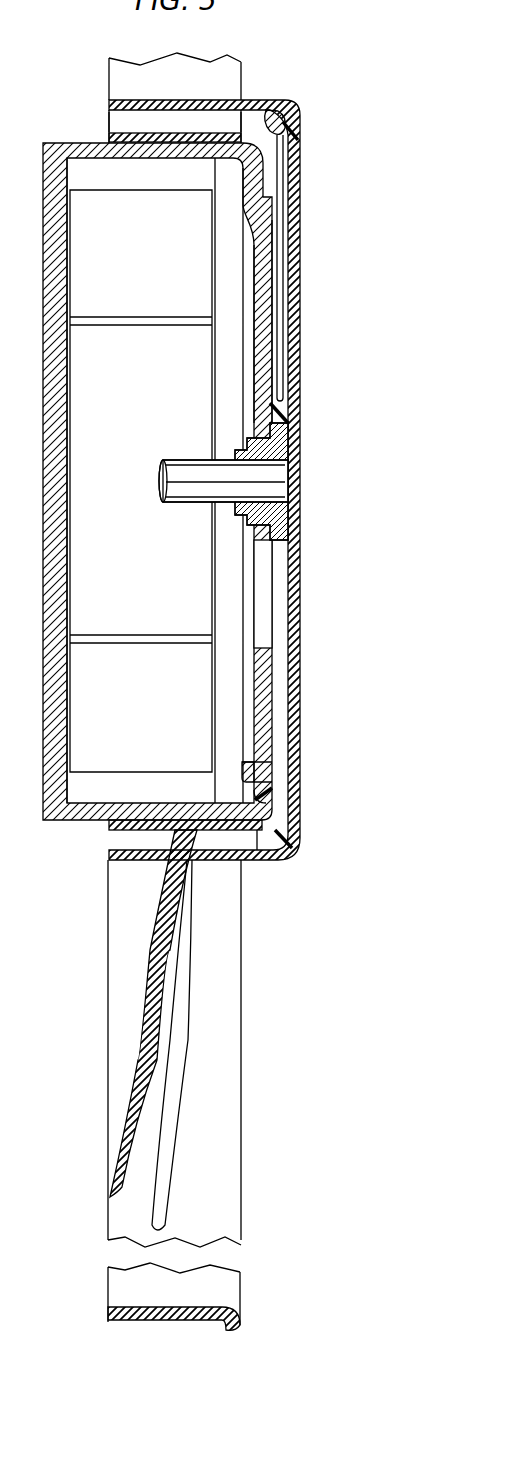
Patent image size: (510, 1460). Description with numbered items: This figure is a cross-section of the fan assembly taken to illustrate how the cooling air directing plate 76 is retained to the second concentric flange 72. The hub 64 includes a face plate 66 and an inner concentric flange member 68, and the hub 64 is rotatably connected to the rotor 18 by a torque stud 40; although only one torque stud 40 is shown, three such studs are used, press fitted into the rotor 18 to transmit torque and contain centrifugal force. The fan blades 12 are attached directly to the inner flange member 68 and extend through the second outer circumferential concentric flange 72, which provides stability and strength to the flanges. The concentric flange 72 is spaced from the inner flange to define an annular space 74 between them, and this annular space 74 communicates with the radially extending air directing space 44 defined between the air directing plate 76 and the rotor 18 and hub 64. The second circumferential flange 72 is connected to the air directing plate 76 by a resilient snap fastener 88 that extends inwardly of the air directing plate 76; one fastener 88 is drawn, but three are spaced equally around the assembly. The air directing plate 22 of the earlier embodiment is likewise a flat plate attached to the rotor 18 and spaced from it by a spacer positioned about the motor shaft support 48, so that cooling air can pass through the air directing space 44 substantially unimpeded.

The fan blades 12 is at (143, 1062).
The rotor 18 is at (67, 820).
The air directing plate 22 is at (300, 192).
The torque stud 40 is at (270, 770).
The air directing space 44 is at (283, 597).
The motor shaft support 48 is at (298, 448).
The hub 64 is at (286, 278).
The face plate 66 is at (272, 802).
The flange member 68 is at (215, 133).
The concentric flange 72 is at (190, 83).
The annular space 74 is at (132, 122).
The air directing plate 76 is at (298, 366).
The resilient snap fastener 88 is at (280, 100).